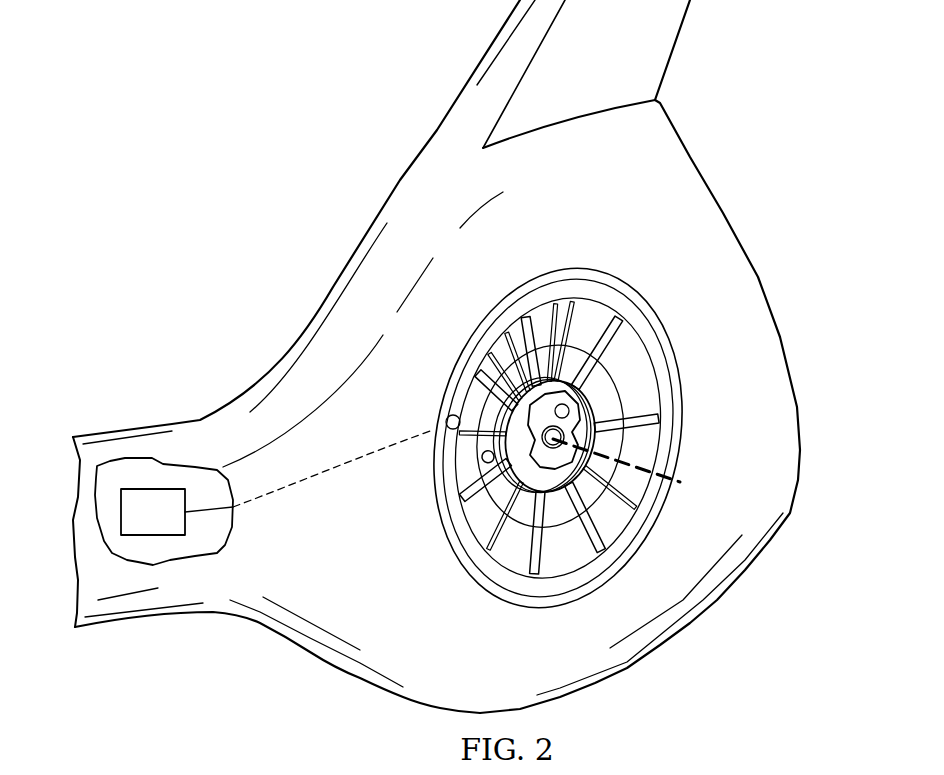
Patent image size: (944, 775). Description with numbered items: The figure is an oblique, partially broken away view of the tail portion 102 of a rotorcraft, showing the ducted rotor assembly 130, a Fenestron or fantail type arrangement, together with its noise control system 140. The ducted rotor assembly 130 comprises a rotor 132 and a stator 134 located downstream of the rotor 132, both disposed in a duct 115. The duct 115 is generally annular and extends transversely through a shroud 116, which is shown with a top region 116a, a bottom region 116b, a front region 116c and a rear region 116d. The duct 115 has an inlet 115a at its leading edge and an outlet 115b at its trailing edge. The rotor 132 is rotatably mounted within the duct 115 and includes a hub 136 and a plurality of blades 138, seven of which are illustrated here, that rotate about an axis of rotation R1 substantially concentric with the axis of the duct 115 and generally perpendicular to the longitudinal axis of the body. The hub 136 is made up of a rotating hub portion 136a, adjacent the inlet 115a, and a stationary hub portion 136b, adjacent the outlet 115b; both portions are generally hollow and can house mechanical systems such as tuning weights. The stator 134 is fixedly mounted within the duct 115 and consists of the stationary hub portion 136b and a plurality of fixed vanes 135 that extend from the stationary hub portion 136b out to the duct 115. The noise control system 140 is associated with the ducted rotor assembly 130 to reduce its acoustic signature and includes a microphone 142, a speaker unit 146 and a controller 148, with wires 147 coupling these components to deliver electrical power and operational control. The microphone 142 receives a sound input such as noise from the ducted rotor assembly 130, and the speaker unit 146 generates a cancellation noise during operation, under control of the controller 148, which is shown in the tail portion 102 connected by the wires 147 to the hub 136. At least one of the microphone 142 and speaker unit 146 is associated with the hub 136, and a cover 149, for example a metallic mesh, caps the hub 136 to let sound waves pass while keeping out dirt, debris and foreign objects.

The tail portion 102 is at (130, 428).
The duct 115 is at (510, 600).
The inlet 115a is at (668, 378).
The outlet 115b is at (532, 296).
The shroud 116 is at (399, 179).
The top region 116a is at (594, 110).
The bottom region 116b is at (618, 676).
The front region 116c is at (313, 353).
The rear region 116d is at (758, 277).
The ducted rotor assembly 130 is at (702, 463).
The rotor 132 is at (619, 549).
The stator 134 is at (433, 462).
The fixed vanes 135 is at (547, 305).
The hub 136 is at (632, 502).
The rotating hub portion 136a is at (483, 357).
The stationary hub portion 136b is at (453, 403).
The blades 138 is at (588, 300).
The noise control system 140 is at (637, 253).
The microphone 142 is at (656, 405).
The speaker unit 146 is at (578, 455).
The wires 147 is at (278, 495).
The controller 148 is at (177, 512).
The cover 149 is at (448, 514).
The axis of rotation R1 is at (629, 468).